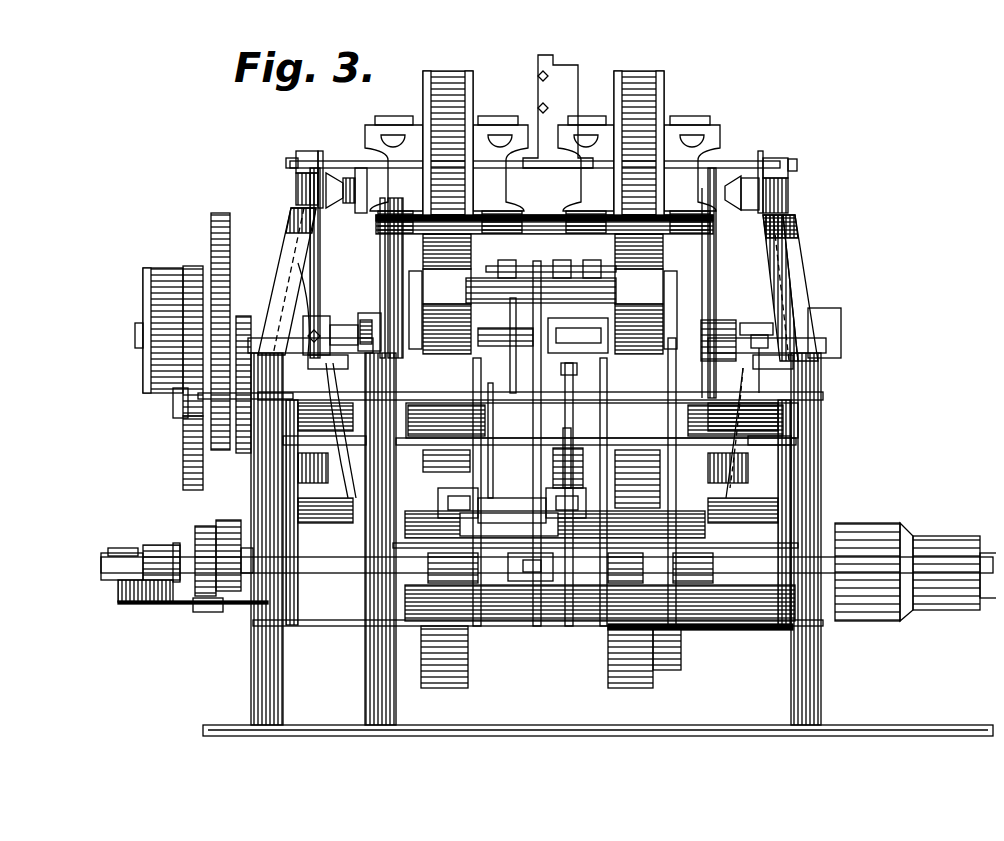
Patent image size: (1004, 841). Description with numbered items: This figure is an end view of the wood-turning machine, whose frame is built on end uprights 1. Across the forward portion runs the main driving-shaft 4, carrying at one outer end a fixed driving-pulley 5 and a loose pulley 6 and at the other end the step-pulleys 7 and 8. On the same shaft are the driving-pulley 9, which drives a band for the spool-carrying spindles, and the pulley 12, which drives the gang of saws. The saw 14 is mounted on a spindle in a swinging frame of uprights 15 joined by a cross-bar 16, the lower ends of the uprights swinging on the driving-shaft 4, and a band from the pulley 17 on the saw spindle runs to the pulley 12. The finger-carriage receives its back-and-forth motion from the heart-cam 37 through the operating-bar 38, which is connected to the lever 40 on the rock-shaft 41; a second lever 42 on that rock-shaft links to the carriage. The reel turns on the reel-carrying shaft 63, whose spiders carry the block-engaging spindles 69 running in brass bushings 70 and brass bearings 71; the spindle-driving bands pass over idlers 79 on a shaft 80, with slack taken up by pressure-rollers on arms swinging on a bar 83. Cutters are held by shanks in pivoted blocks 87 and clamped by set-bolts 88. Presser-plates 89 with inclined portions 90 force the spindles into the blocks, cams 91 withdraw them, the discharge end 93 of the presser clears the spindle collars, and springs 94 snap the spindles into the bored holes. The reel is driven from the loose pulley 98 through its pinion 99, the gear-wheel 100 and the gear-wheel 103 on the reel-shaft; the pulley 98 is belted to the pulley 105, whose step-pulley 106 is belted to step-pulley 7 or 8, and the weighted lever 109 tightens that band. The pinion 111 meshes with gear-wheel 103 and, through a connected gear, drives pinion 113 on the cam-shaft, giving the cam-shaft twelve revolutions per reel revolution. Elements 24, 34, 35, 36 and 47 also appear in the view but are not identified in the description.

The end uprights 1 is at (275, 653).
The main driving-shaft 4 is at (330, 553).
The fixed driving-pulley 5 is at (870, 511).
The loose pulley 6 is at (908, 531).
The step-pulley 7 is at (784, 660).
The step-pulley 8 is at (177, 548).
The driving-pulley 9 is at (437, 681).
The pulley 12 is at (698, 620).
The saw 14 is at (524, 370).
The uprights 15 is at (600, 373).
The cross-bar 16 is at (635, 388).
The pulley 17 is at (718, 312).
The rod 24 is at (557, 388).
The rod 34 is at (503, 385).
The rod 35 is at (556, 425).
The collar 36 is at (553, 253).
The heart-cam 37 is at (465, 374).
The operating-bar 38 is at (500, 255).
The lever 40 is at (470, 463).
The rock-shaft 41 is at (597, 509).
The lever 42 is at (562, 468).
The bracket 47 is at (502, 495).
The reel-carrying shaft 63 is at (330, 308).
The spool or block engaging spindles 69 is at (340, 165).
The brass bushings 70 is at (620, 681).
The brass bearings 71 is at (655, 661).
The idlers 79 is at (543, 294).
The shaft 80 is at (468, 268).
The bar 83 is at (525, 214).
The blocks 87 is at (432, 78).
The set-bolts 88 is at (542, 174).
The presser-plates 89 is at (350, 232).
The inclined portions 90 is at (290, 262).
The cams 91 is at (296, 150).
The discharge end 93 is at (300, 475).
The springs 94 is at (305, 360).
The loose pulley 98 is at (157, 262).
The pinion 99 is at (185, 258).
The gear-wheel 100 is at (175, 484).
The gear-wheel 103 is at (213, 205).
The pulley 105 is at (147, 541).
The step-pulley 106 is at (201, 518).
The lever 109 is at (170, 393).
The pinion 111 is at (236, 308).
The pinion 113 is at (285, 389).